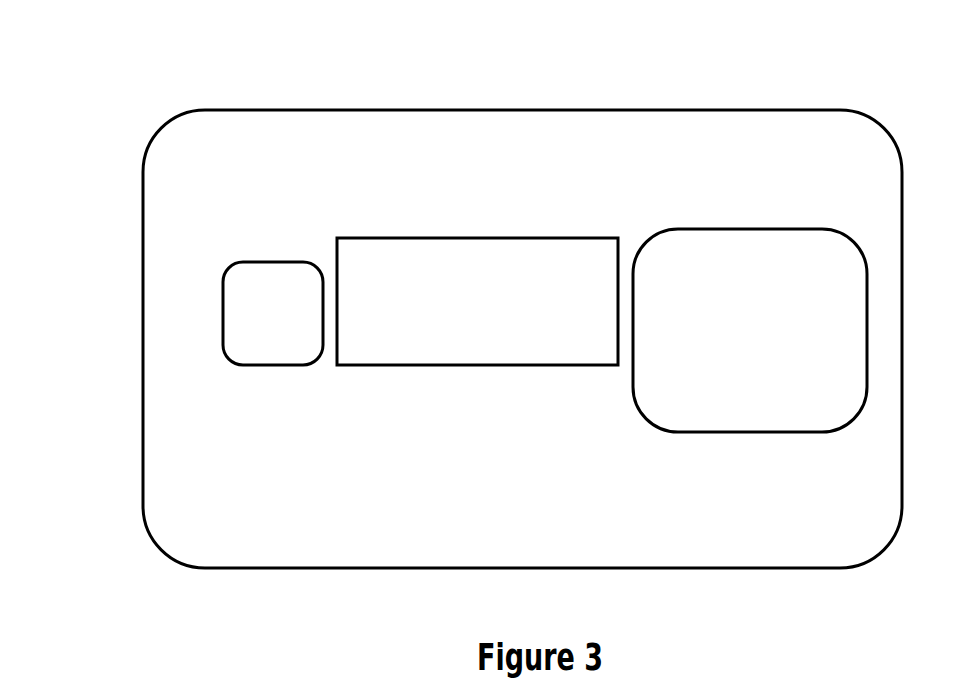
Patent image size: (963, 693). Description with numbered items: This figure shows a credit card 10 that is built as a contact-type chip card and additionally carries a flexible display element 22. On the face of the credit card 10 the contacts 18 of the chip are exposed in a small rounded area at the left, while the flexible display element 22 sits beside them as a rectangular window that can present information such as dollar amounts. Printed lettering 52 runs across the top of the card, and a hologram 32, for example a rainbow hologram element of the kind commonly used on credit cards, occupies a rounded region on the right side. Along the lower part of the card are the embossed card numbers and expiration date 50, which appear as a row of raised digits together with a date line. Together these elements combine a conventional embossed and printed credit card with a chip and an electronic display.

The credit card 10 is at (114, 74).
The contacts 18 is at (291, 329).
The flexible display element 22 is at (448, 290).
The hologram 32 is at (767, 346).
The embossed card numbers 50 is at (534, 433).
The printed lettering 52 is at (559, 131).